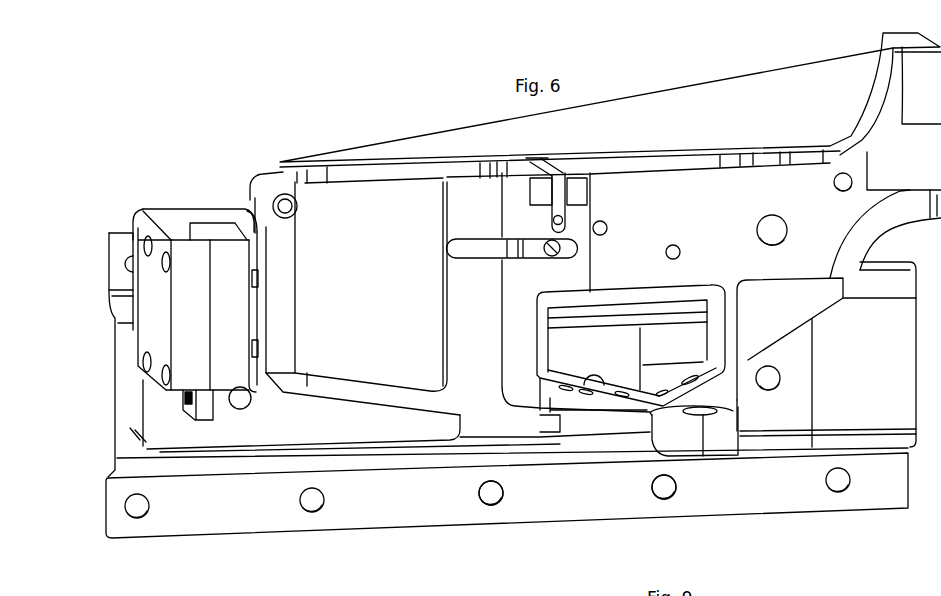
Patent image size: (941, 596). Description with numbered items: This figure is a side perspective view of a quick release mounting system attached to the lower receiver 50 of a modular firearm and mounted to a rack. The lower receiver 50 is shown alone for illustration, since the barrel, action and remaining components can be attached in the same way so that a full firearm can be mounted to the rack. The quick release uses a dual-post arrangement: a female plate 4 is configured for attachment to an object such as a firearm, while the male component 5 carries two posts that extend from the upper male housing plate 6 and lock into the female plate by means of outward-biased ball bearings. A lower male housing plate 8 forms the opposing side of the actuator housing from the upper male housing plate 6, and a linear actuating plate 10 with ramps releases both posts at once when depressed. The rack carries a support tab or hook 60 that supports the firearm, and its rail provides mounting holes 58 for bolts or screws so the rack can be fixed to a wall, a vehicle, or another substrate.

The female plate 4 is at (265, 318).
The male component 5 is at (195, 340).
The upper male housing plate 6 is at (221, 230).
The lower male housing plate 8 is at (170, 222).
The linear actuating plate 10 is at (184, 410).
The lower receiver 50 is at (648, 181).
The mounting holes 58 is at (663, 490).
The support tab or hook 60 is at (733, 447).